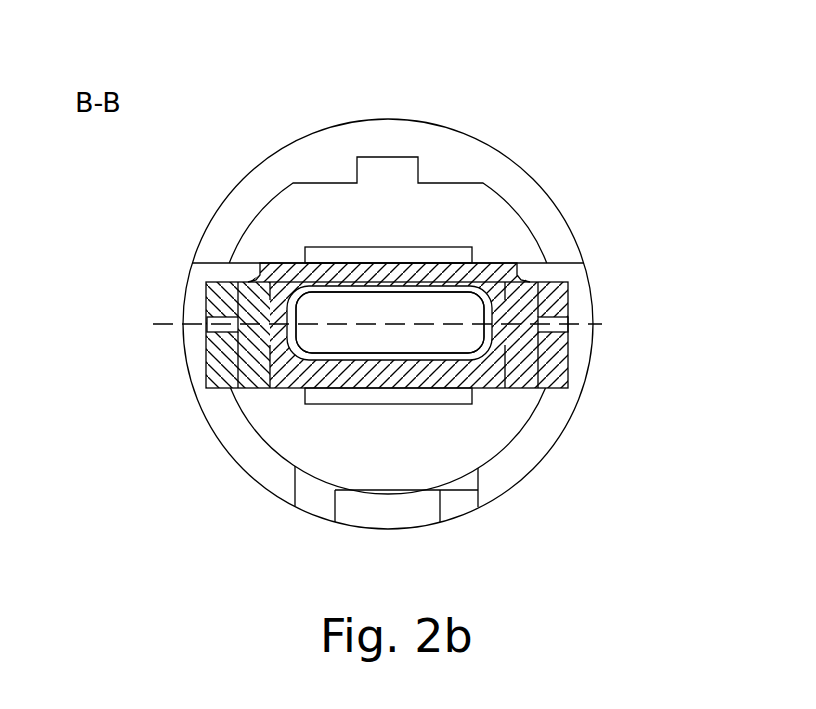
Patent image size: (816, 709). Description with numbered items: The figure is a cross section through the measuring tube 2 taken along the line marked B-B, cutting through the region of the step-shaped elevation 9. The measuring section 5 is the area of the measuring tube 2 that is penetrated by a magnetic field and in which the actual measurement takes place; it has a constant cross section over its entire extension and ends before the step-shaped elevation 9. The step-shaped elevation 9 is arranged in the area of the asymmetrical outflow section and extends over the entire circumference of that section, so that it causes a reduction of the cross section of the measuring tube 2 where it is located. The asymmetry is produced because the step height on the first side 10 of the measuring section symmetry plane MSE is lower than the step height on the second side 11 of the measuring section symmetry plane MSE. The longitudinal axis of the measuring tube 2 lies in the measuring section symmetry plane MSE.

The measuring tube 2 is at (590, 212).
The measuring section 5 is at (460, 340).
The step-shaped elevation 9 is at (286, 388).
The first side 10 is at (410, 295).
The second side 11 is at (428, 342).
The measuring section symmetry plane MSE is at (610, 324).